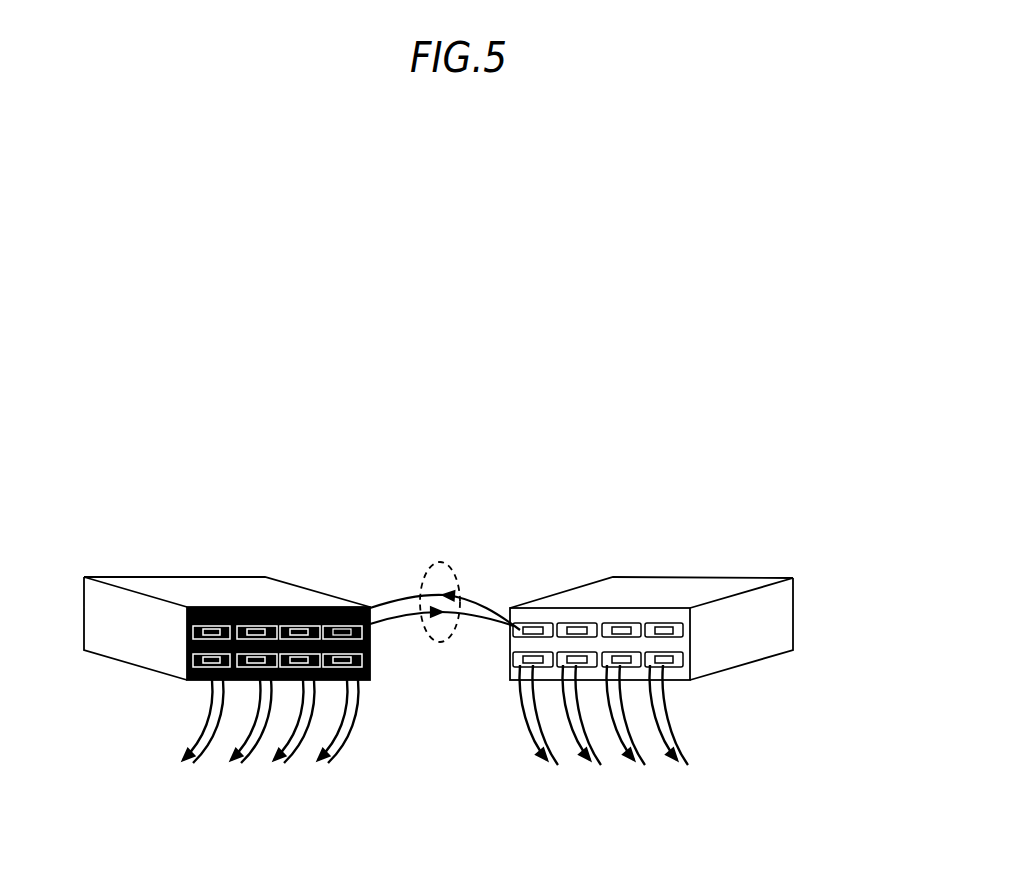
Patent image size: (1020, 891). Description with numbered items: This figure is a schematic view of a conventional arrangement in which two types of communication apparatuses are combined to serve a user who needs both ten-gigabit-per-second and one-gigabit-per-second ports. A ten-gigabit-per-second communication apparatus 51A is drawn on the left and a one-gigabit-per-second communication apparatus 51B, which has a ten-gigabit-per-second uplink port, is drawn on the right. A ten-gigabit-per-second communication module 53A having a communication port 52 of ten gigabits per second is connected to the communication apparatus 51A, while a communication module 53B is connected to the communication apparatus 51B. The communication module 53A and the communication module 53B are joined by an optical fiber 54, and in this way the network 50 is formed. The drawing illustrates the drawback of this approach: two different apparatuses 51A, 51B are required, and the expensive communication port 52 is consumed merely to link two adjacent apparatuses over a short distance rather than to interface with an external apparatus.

The network 50 is at (672, 373).
The 10-Gbit/s communication apparatus 51A is at (237, 541).
The 1-Gbit/s communication apparatus 51B is at (608, 537).
The communication port 52 is at (398, 557).
The 10-Gbit/s communication module 53A is at (437, 813).
The communication module 53B is at (517, 647).
The optical fiber 54 is at (436, 564).